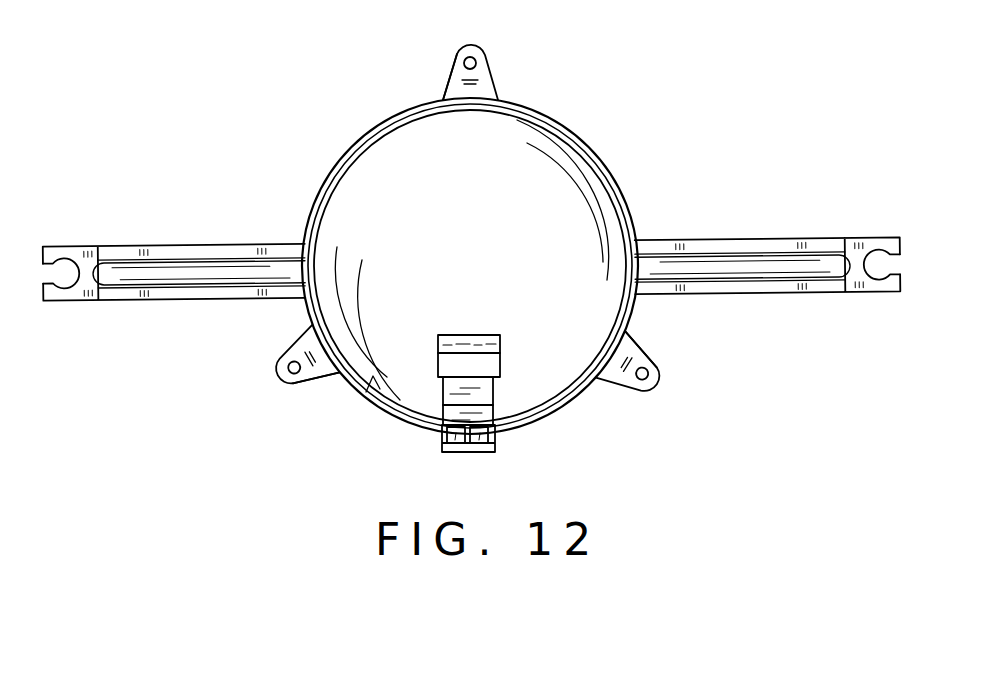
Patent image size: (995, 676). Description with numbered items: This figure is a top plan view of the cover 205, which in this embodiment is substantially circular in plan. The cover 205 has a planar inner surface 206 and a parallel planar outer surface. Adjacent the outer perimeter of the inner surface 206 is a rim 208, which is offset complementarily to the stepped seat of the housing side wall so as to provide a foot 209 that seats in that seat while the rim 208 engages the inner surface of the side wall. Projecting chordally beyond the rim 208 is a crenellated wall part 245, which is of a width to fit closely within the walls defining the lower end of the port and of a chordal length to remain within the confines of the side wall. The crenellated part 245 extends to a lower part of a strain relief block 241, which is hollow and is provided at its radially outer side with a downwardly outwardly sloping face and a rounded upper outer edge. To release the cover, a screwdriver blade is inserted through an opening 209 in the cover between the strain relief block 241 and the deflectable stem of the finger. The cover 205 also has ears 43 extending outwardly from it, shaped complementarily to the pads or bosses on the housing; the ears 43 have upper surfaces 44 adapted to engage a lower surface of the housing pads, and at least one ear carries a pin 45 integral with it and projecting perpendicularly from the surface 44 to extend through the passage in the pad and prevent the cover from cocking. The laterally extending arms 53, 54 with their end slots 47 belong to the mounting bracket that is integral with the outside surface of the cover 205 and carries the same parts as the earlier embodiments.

The ears 43 is at (484, 75).
The upper surfaces of the ears 44 is at (449, 80).
The pin 45 is at (477, 58).
The clip slot 47 is at (65, 302).
The right support arm 53 is at (778, 293).
The left support arm 54 is at (195, 301).
The cover 205 is at (504, 290).
The inner surface 206 is at (538, 197).
The rim 208 is at (370, 392).
The foot 209 is at (417, 433).
The strain relief block 241 is at (503, 412).
The crenellated wall part 245 is at (478, 453).